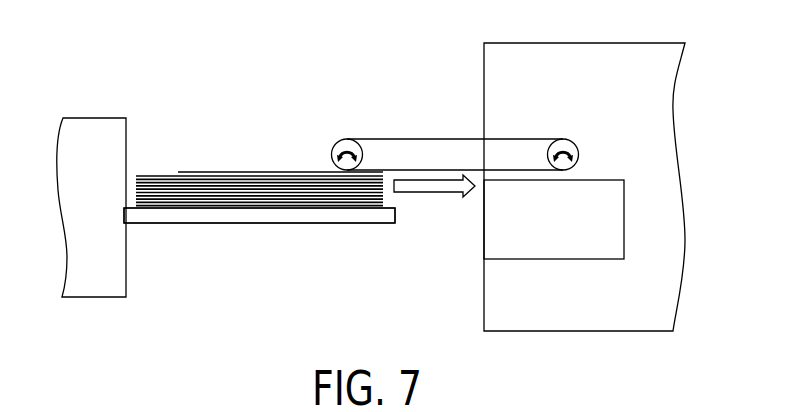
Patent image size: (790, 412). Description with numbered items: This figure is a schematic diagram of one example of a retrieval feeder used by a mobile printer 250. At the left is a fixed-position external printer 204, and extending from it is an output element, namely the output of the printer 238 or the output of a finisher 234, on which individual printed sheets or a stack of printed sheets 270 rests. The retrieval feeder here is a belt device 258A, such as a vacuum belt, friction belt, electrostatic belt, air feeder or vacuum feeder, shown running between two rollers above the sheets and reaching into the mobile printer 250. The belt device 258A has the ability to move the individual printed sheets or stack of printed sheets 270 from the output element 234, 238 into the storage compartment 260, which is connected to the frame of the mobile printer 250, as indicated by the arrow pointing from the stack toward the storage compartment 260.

The external printer 204 is at (97, 118).
The stack of printed sheets 270 is at (235, 158).
The finisher output 234 is at (259, 237).
The printer output 238 is at (259, 264).
The belt retrieval feeder 258A is at (400, 124).
The mobile printer 250 is at (642, 63).
The storage compartment 260 is at (598, 195).